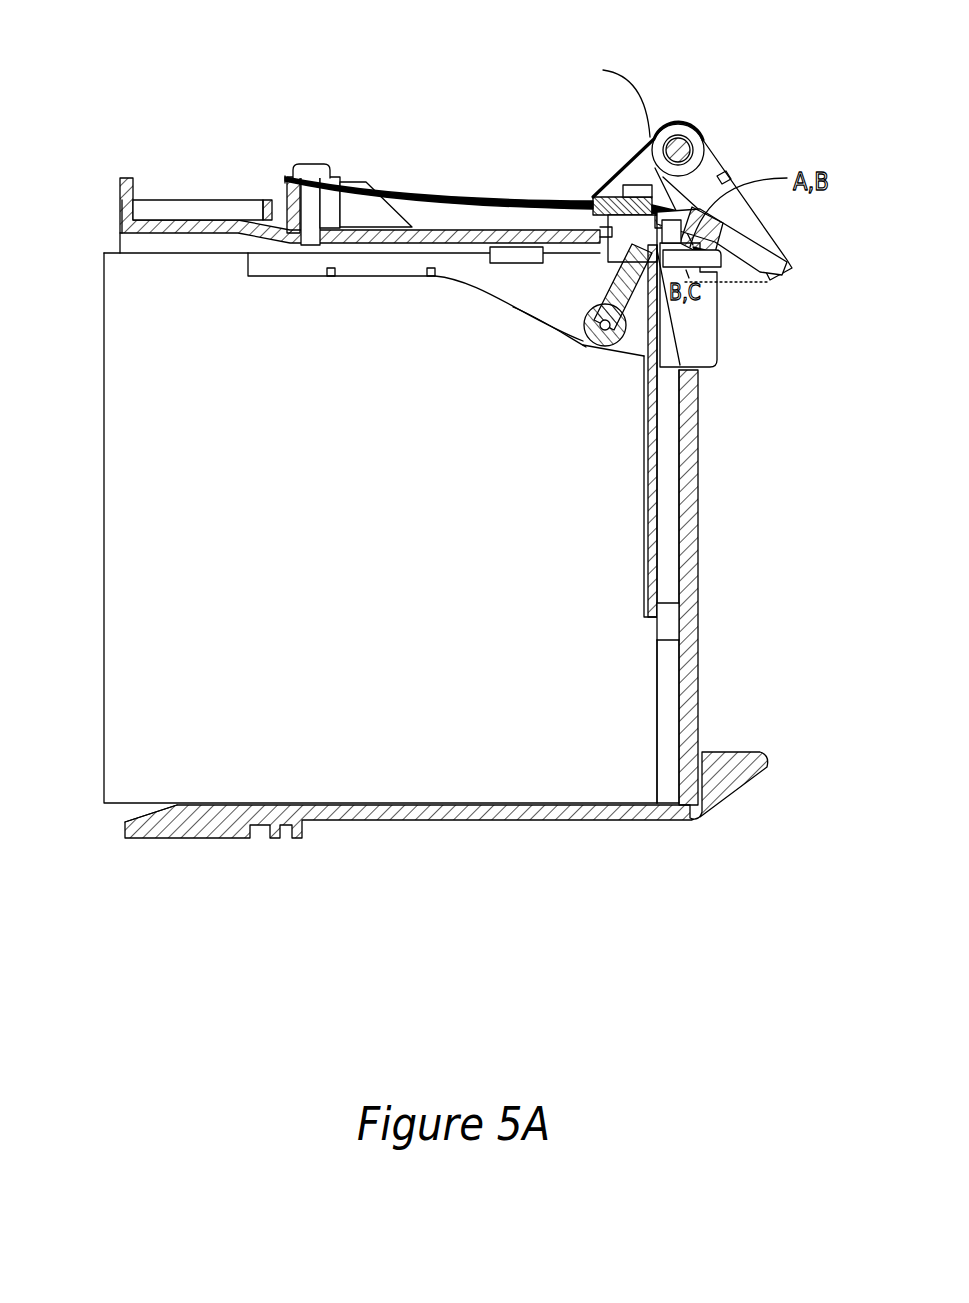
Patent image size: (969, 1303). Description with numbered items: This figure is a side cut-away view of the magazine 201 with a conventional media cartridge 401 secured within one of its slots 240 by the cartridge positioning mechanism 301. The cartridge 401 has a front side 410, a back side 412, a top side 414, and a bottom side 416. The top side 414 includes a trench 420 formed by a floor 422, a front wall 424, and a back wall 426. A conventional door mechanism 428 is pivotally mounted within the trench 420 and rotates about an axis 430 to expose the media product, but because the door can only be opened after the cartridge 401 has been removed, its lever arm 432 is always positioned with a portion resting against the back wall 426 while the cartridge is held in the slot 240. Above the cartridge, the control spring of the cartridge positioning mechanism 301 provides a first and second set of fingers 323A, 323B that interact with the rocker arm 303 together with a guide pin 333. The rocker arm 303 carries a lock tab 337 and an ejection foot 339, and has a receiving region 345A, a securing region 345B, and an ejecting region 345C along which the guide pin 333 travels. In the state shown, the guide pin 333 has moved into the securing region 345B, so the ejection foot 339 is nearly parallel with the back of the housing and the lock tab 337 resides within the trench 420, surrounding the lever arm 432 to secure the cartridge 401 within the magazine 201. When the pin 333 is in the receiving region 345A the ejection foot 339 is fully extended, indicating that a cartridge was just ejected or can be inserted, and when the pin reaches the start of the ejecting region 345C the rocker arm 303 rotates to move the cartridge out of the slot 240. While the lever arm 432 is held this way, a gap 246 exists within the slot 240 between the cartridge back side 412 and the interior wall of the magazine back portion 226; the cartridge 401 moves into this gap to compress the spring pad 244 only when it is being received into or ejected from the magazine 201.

The magazine 201 is at (118, 104).
The cartridge positioning mechanism 301 is at (428, 118).
The rocker arm 303 is at (745, 126).
The first set of fingers 323A is at (525, 198).
The second set of fingers 323B is at (393, 193).
The guide pin 333 is at (745, 283).
The lock tab 337 is at (618, 253).
The ejection foot 339 is at (642, 297).
The receiving region 345A is at (757, 264).
The securing region 345B is at (595, 97).
The ejecting region 345C is at (750, 288).
The magazine back portion 226 is at (670, 430).
The spring pad 244 is at (672, 627).
The gap 246 is at (668, 549).
The slot 240 is at (112, 818).
The media cartridge 401 is at (88, 348).
The front side 410 is at (104, 540).
The back side 412 is at (657, 713).
The top side 414 is at (110, 253).
The bottom side 416 is at (367, 803).
The trench 420 is at (488, 280).
The floor 422 is at (513, 307).
The front wall 424 is at (248, 262).
The back wall 426 is at (705, 348).
The door mechanism 428 is at (657, 506).
The axis 430 is at (587, 346).
The lever arm 432 is at (593, 289).